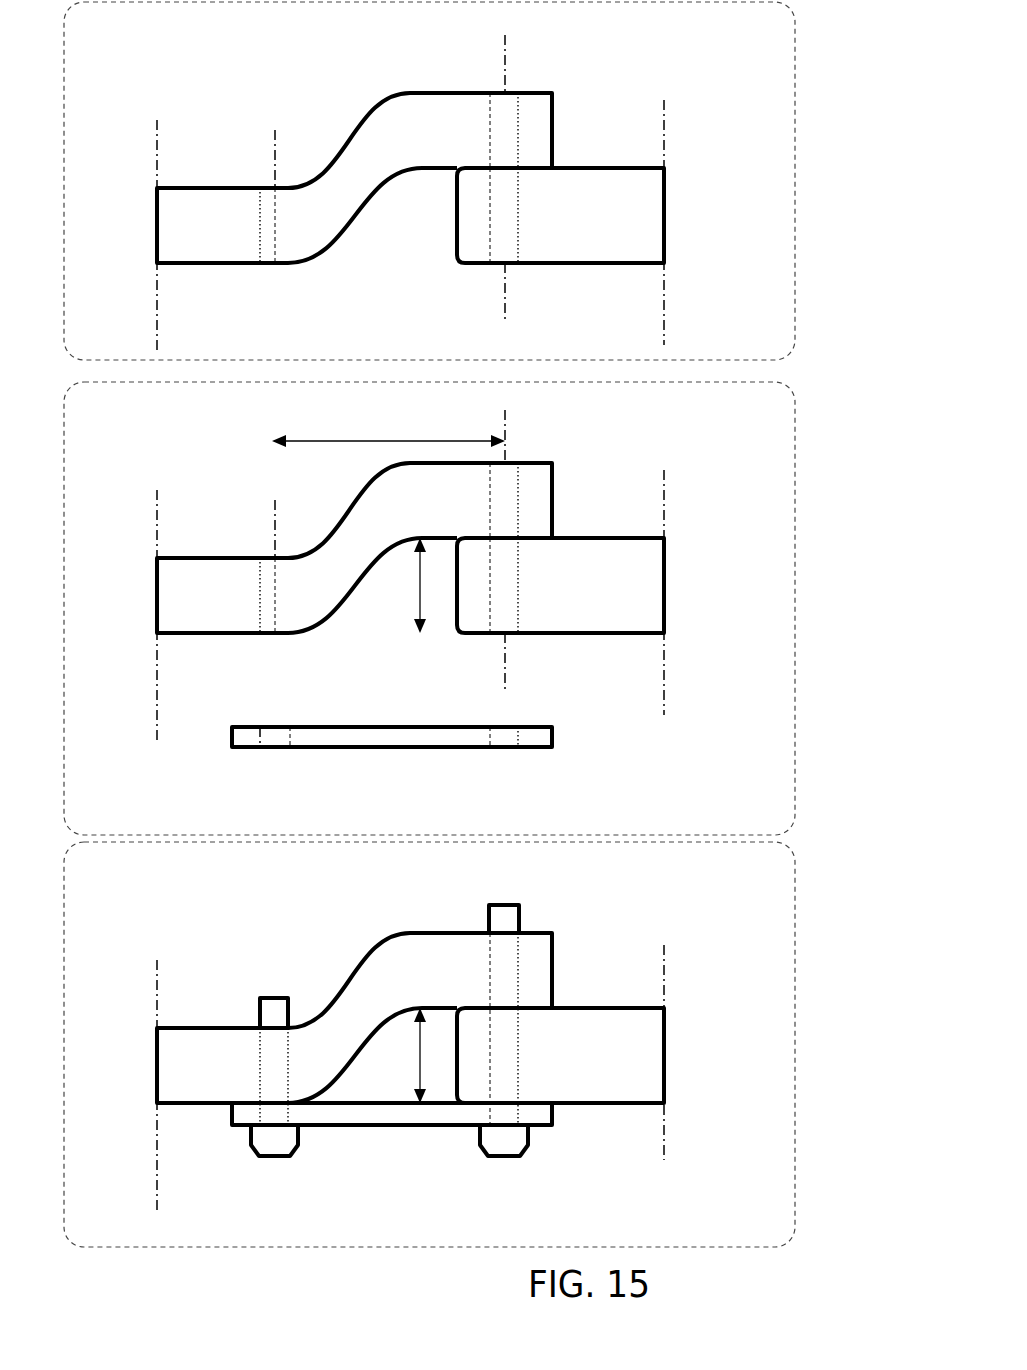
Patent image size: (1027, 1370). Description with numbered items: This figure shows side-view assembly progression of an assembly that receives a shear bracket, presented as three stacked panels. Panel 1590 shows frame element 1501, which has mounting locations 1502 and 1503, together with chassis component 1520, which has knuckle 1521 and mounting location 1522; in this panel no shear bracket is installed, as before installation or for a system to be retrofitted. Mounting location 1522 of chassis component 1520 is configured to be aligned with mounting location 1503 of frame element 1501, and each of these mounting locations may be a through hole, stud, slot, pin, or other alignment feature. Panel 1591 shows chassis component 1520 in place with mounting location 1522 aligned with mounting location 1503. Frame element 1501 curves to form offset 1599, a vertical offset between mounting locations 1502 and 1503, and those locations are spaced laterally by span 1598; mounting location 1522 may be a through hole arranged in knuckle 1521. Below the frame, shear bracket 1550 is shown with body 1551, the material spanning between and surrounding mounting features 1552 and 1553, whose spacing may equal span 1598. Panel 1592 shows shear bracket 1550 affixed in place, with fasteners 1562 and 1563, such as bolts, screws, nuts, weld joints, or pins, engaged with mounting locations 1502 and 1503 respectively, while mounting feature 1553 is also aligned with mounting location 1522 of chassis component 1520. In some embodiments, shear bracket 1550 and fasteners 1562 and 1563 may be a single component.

The frame element 1501 is at (241, 229).
The mounting location 1502 is at (262, 263).
The mounting location 1503 is at (517, 93).
The chassis component 1520 is at (633, 219).
The knuckle 1521 is at (533, 300).
The mounting location 1522 is at (518, 215).
The shear bracket 1550 is at (388, 747).
The body 1551 is at (495, 703).
The mounting feature 1552 is at (270, 747).
The mounting feature 1553 is at (505, 747).
The fastener 1562 is at (262, 998).
The fastener 1563 is at (505, 905).
The panel 1590 is at (728, 44).
The panel 1591 is at (728, 429).
The panel 1592 is at (728, 879).
The span 1598 is at (388, 428).
The offset 1599 is at (392, 822).